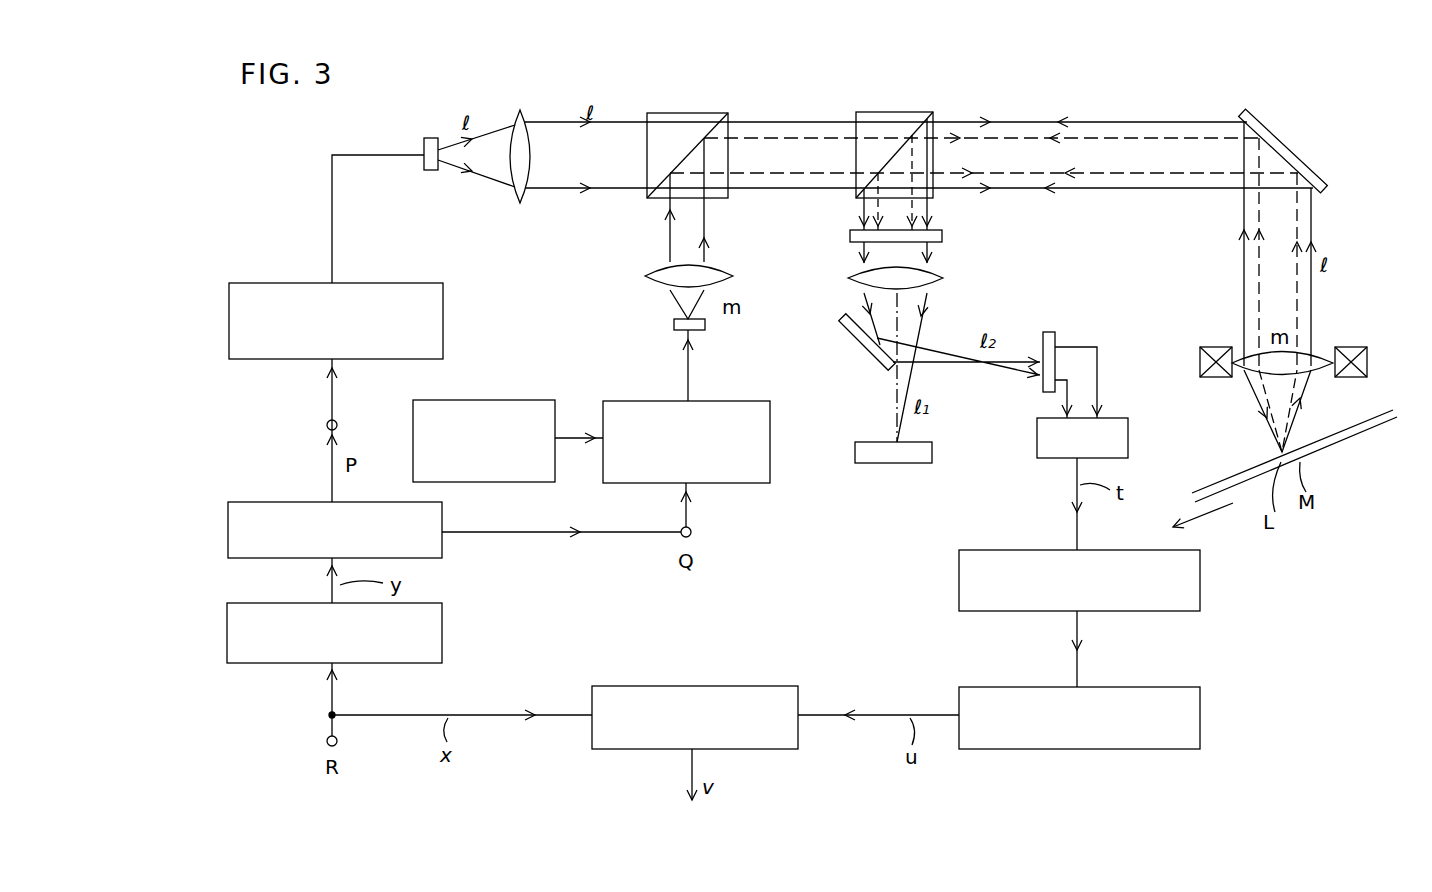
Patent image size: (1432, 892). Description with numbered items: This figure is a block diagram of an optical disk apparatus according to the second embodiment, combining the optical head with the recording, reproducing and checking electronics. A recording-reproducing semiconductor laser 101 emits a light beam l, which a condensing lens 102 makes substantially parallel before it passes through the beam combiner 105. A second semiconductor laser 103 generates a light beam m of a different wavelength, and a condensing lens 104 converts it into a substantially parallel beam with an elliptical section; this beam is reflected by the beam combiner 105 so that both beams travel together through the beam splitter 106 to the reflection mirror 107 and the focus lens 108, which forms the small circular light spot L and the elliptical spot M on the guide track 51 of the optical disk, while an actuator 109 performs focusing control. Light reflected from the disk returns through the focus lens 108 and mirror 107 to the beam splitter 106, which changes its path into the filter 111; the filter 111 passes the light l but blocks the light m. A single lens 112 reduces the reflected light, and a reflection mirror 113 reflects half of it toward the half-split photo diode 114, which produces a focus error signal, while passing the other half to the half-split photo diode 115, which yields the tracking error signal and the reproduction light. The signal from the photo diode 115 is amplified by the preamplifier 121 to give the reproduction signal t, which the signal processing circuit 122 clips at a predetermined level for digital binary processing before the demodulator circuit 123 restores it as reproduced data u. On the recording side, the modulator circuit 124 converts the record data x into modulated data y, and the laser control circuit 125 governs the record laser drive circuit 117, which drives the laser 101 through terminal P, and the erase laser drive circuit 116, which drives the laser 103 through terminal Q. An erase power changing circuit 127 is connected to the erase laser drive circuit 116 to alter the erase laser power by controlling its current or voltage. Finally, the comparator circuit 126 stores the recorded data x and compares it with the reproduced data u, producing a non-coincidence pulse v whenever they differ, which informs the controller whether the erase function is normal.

The guide track 51 is at (1372, 425).
The recording-reproducing semiconductor laser 101 is at (430, 138).
The condensing lens 102 is at (520, 110).
The semiconductor laser 103 is at (674, 326).
The condensing lens 104 is at (648, 278).
The beam combiner 105 is at (690, 113).
The beam splitter 106 is at (891, 112).
The reflection mirror 107 is at (1292, 150).
The focus lens 108 is at (1322, 355).
The actuator 109 is at (1367, 347).
The filter 111 is at (942, 236).
The single lens 112 is at (943, 275).
The reflection mirror 113 is at (845, 333).
The half-split photo diode 114 is at (932, 455).
The half-split photo diode 115 is at (1050, 332).
The erase laser drive circuit 116 is at (770, 420).
The record laser drive circuit 117 is at (443, 318).
The preamplifier 121 is at (1128, 438).
The signal processing circuit 122 is at (1200, 585).
The demodulator circuit 123 is at (1200, 720).
The modulator circuit 124 is at (442, 632).
The laser control circuit 125 is at (262, 502).
The comparator circuit 126 is at (700, 686).
The erase power changing circuit 127 is at (413, 406).